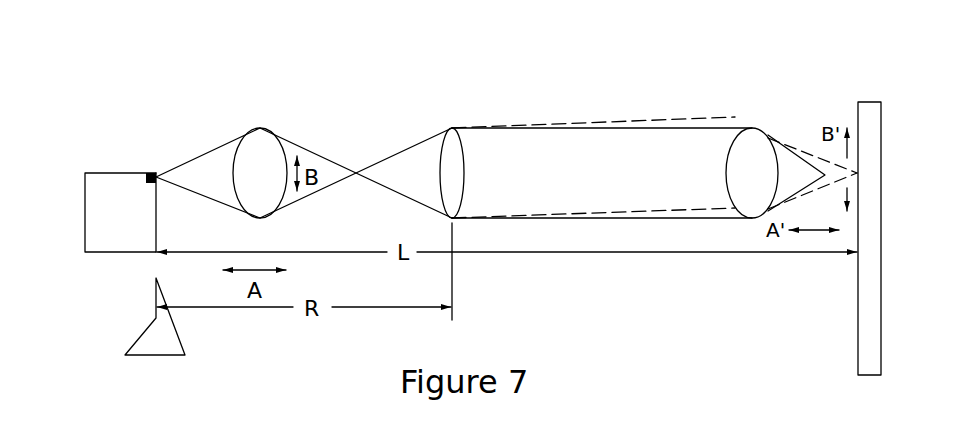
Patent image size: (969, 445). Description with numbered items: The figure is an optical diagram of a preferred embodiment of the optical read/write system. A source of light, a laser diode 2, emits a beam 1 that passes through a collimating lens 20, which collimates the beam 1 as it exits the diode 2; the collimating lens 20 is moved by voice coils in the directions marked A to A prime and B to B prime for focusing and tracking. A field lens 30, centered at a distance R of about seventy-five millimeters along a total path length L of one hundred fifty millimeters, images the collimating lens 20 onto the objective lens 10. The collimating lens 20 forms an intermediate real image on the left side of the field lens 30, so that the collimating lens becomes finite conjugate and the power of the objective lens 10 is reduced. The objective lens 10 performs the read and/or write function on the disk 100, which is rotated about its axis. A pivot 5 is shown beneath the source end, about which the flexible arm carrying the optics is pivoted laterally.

The beam 1 is at (395, 155).
The laser diode 2 is at (105, 210).
The pivot 5 is at (147, 348).
The objective lens 10 is at (750, 138).
The collimating lens 20 is at (259, 140).
The field lens 30 is at (452, 128).
The disk 100 is at (857, 110).